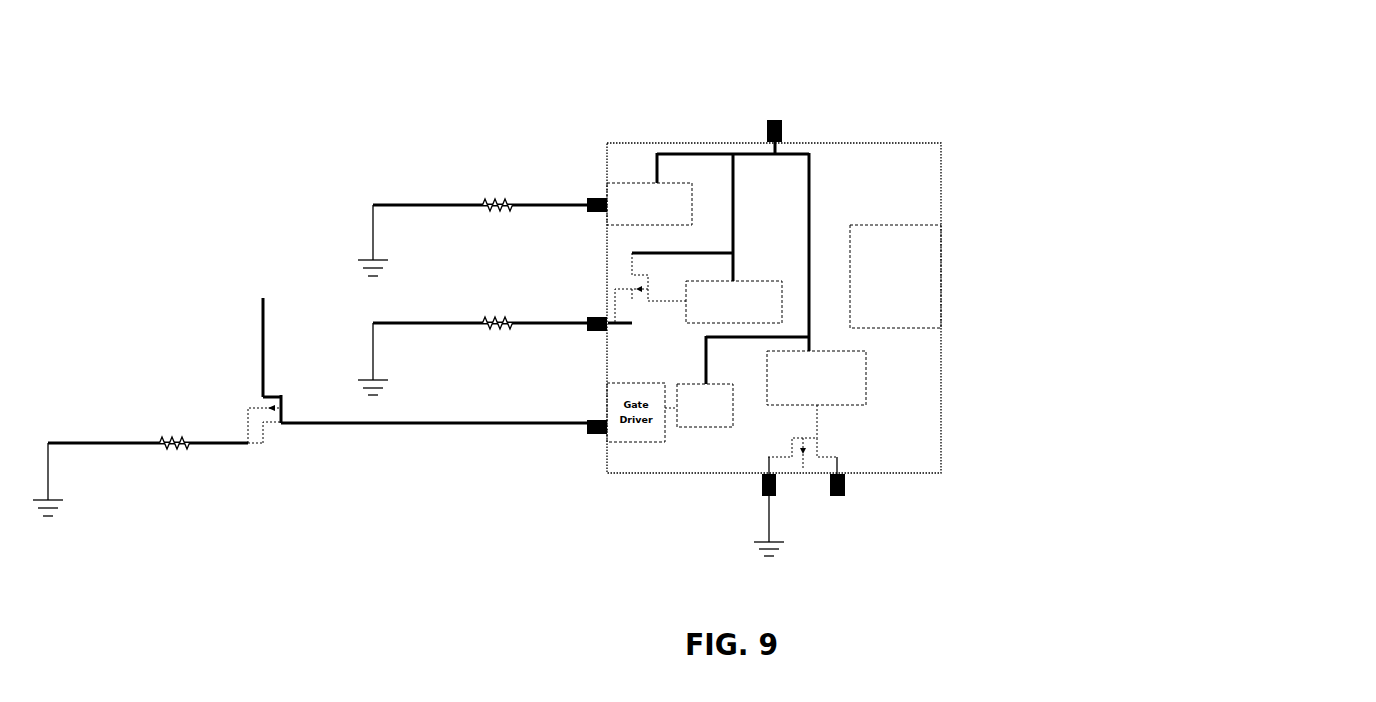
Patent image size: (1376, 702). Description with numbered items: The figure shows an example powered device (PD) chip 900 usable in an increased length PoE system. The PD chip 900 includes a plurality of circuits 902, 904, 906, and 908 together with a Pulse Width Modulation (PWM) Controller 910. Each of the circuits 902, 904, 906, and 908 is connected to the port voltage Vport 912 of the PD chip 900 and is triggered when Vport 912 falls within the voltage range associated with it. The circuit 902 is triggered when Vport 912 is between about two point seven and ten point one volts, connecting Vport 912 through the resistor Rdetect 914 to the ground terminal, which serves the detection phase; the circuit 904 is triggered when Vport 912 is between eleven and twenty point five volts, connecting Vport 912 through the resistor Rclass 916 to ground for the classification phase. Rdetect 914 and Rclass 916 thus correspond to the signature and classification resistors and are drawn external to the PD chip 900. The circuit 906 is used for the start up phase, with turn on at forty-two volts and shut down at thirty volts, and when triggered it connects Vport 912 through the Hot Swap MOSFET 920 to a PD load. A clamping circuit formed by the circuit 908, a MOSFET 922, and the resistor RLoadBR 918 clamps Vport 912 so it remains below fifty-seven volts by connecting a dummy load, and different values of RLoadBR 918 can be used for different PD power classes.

The powered device (PD) chip 900 is at (1369, 54).
The circuit 902 is at (625, 180).
The circuit 904 is at (760, 282).
The circuit 906 is at (867, 384).
The circuit 908 is at (706, 428).
The Pulse Width Modulation (PWM) Controller 910 is at (880, 225).
The port voltage Vport 912 is at (783, 130).
The resistor Rdetect 914 is at (523, 173).
The resistor Rclass 916 is at (523, 292).
The resistor RLoadBR 918 is at (203, 408).
The Hot Swap MOSFET 920 is at (827, 450).
The MOSFET 922 is at (285, 373).